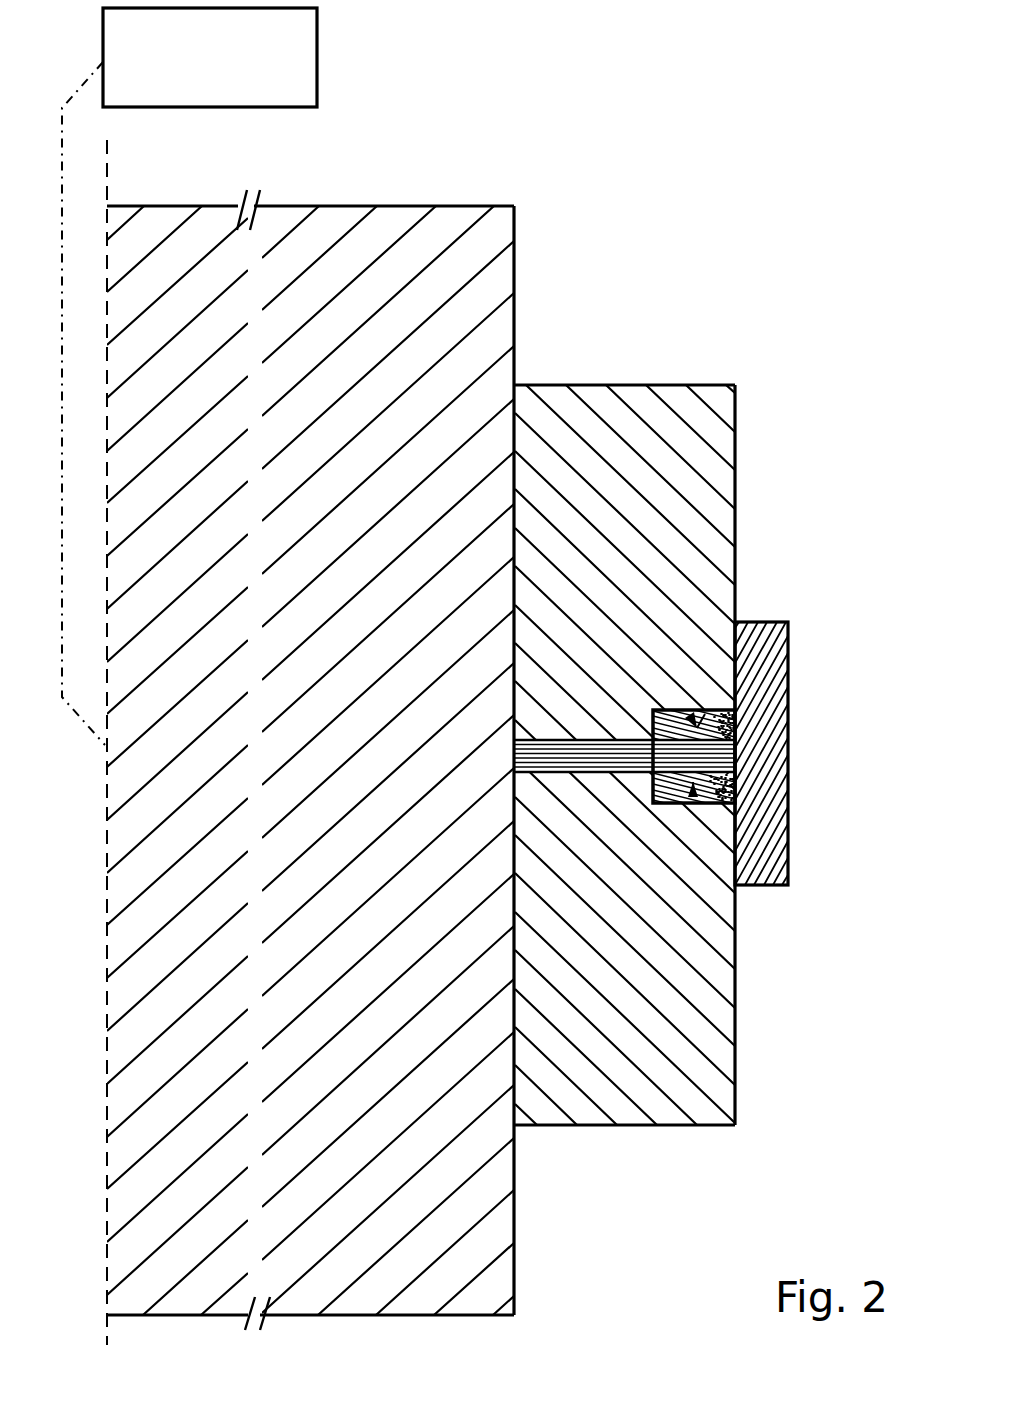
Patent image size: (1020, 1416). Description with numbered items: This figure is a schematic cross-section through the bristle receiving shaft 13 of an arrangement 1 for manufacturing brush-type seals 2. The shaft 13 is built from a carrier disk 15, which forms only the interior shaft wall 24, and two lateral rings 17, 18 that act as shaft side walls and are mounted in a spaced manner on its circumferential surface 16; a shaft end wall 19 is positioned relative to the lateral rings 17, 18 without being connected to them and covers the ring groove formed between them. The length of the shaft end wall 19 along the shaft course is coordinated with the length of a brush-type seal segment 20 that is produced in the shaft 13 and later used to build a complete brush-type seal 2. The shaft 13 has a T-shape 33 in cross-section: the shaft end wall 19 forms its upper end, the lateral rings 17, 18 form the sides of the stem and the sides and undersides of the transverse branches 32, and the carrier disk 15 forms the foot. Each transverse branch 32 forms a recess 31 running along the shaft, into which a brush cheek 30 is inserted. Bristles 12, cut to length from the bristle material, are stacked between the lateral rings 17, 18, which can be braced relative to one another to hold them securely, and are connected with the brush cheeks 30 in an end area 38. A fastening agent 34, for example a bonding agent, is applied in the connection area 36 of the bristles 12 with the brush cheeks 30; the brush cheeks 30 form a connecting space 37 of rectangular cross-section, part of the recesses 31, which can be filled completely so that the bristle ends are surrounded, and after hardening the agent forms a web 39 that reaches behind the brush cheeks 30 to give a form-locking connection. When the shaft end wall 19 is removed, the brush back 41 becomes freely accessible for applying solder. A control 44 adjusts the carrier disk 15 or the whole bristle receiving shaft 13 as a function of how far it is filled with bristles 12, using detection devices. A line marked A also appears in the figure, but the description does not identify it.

The arrangement 1 is at (752, 130).
The brush-type seal 2 is at (583, 540).
The bristles 12 is at (515, 757).
The bristle receiving shaft 13 is at (596, 852).
The carrier disk 15 is at (160, 228).
The circumferential surface 16 is at (515, 262).
The lateral ring 17 is at (632, 1105).
The lateral ring 18 is at (595, 398).
The shaft end wall 19 is at (762, 640).
The brush-type seal segment 20 is at (470, 730).
The interior shaft wall 24 is at (522, 743).
The brush cheek 30 is at (657, 768).
The recess 31 is at (717, 712).
The transverse branch 32 is at (660, 705).
The T-shape 33 is at (633, 942).
The fastening agent 34 is at (742, 728).
The connection area 36 is at (760, 808).
The connecting space 37 is at (752, 802).
The end area 38 is at (725, 715).
The web 39 is at (740, 733).
The brush back 41 is at (752, 753).
The control 44 is at (317, 47).
The axis A is at (105, 752).